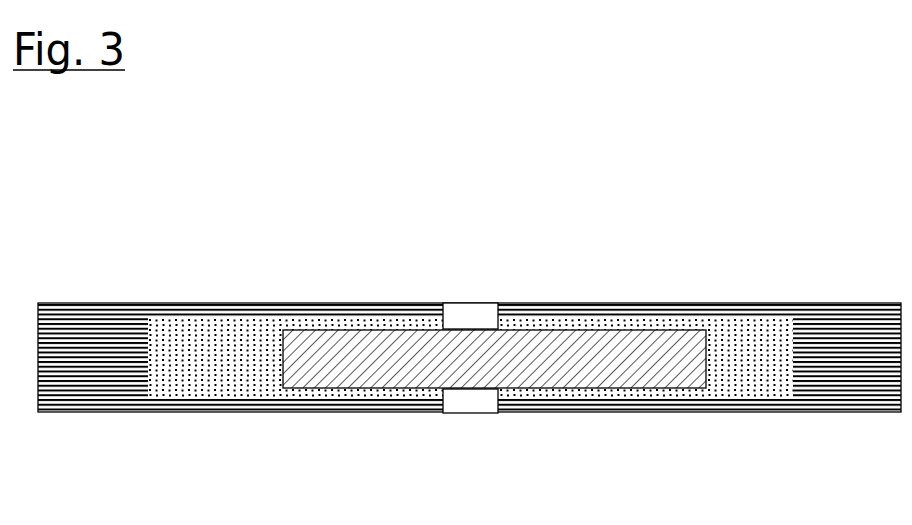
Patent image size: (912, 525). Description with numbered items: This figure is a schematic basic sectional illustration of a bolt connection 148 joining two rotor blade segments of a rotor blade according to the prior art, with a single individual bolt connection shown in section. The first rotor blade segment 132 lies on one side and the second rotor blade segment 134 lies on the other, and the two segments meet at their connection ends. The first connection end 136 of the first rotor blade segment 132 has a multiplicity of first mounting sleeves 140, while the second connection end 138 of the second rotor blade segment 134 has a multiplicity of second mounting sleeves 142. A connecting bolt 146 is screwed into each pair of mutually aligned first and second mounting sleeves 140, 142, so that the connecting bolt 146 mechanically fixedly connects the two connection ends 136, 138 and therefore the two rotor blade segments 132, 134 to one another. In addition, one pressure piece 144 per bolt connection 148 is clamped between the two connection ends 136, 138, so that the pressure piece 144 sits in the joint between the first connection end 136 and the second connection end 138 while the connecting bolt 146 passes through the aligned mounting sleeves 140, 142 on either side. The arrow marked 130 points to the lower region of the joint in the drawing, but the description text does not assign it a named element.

The bolt connection 148 is at (469, 329).
The second rotor blade segment 134 is at (469, 275).
The first rotor blade segment 132 is at (90, 410).
The first mounting sleeve 140 is at (231, 407).
The second mounting sleeve 142 is at (762, 407).
The connecting bolt 146 is at (634, 407).
The first connection end 136 is at (446, 303).
The second connection end 138 is at (496, 303).
The pressure piece 144 is at (452, 404).
The lower contact 130 is at (469, 418).